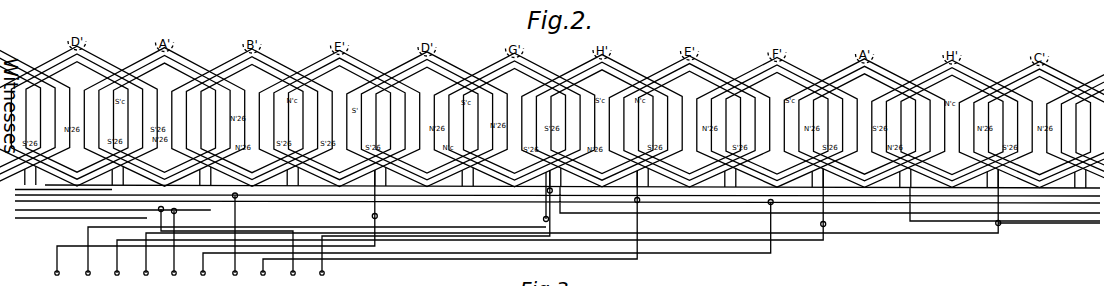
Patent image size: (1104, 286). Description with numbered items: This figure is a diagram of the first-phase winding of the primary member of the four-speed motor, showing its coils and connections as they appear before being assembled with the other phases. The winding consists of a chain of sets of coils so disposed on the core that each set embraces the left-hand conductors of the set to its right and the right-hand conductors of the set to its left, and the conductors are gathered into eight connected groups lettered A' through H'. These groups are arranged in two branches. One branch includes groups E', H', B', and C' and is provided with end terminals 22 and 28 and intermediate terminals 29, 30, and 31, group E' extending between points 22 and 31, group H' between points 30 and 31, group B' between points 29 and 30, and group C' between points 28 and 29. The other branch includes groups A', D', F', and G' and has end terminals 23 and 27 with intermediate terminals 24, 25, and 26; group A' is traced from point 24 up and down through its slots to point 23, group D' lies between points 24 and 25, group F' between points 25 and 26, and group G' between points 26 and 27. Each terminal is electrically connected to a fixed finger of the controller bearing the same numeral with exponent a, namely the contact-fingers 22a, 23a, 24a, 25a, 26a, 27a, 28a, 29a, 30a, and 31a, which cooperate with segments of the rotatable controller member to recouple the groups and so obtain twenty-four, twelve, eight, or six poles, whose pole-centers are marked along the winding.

The end terminal 22 is at (224, 221).
The end terminal 23 is at (478, 221).
The intermediate terminal 24 is at (242, 233).
The intermediate terminal 25 is at (495, 237).
The intermediate terminal 26 is at (443, 221).
The end terminal 27 is at (318, 222).
The end terminal 28 is at (623, 221).
The intermediate terminal 29 is at (181, 241).
The intermediate terminal 30 is at (221, 235).
The intermediate terminal 31 is at (458, 222).
The contact-finger 22a is at (50, 273).
The contact-finger 23a is at (110, 273).
The contact-finger 24a is at (228, 273).
The contact-finger 25a is at (196, 273).
The contact-finger 26a is at (315, 273).
The contact-finger 27a is at (81, 273).
The contact-finger 28a is at (139, 273).
The contact-finger 29a is at (167, 273).
The contact-finger 30a is at (286, 273).
The contact-finger 31a is at (256, 273).